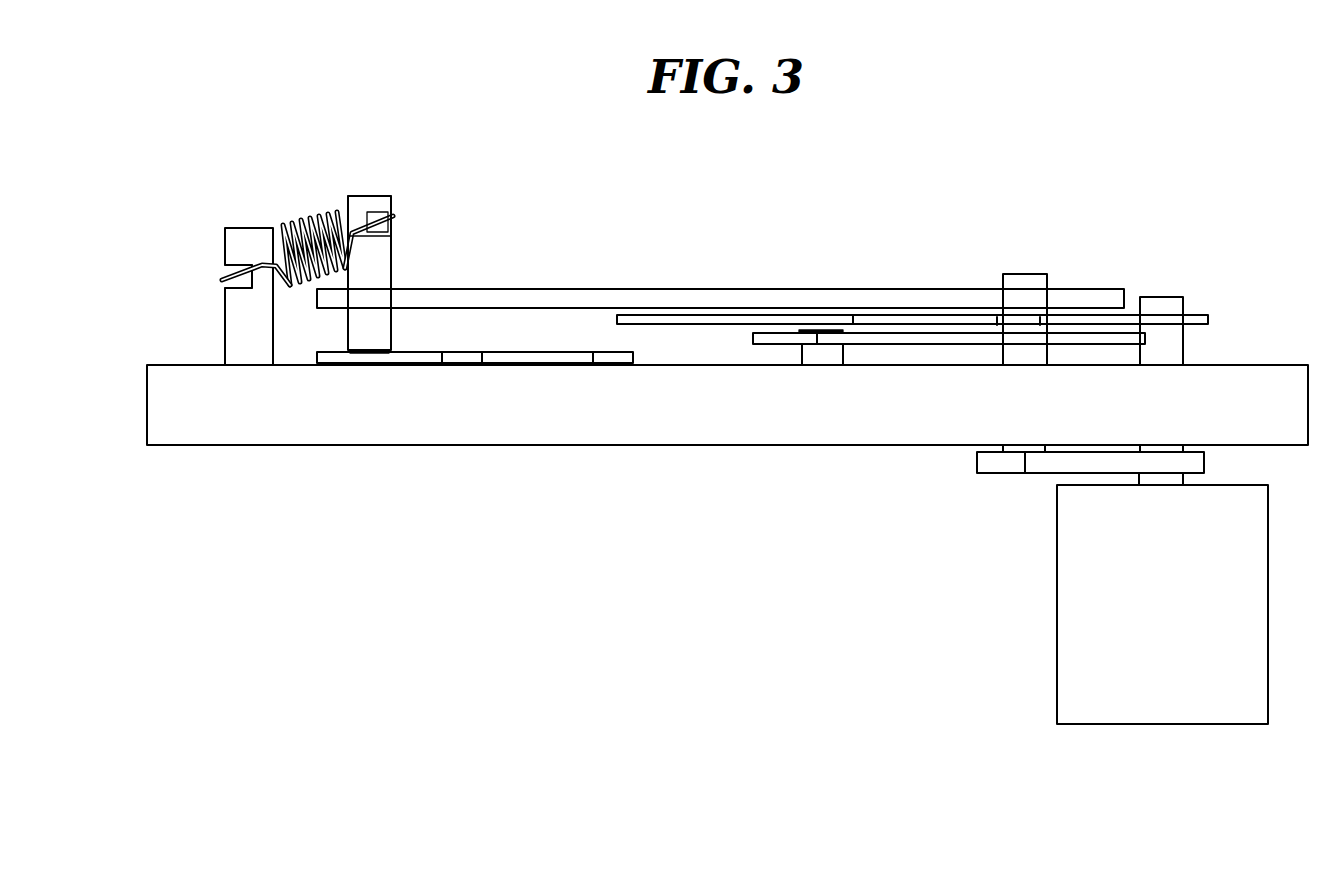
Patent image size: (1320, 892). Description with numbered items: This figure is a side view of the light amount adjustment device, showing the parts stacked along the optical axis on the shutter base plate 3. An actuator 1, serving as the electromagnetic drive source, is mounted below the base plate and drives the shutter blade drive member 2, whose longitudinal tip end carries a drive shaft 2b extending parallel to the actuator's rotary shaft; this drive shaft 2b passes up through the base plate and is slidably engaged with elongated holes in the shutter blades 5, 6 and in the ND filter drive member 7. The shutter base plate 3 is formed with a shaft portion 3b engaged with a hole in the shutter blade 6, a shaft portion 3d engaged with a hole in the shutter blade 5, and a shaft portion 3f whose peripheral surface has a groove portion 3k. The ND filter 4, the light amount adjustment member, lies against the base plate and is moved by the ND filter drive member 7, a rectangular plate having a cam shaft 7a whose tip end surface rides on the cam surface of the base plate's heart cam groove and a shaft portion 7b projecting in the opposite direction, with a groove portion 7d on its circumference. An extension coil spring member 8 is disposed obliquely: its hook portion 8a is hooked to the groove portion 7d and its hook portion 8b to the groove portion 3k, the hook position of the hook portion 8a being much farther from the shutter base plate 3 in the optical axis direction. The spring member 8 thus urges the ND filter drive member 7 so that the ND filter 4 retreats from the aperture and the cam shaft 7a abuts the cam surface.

The actuator 1 is at (1057, 620).
The shutter blade drive member 2 is at (975, 461).
The drive shaft 2b is at (1023, 272).
The shutter base plate 3 is at (1248, 372).
The shaft portion 3b is at (1172, 296).
The shaft portion 3d is at (803, 353).
The shaft portion 3f is at (237, 235).
The groove portion 3k is at (227, 282).
The ND filter 4 is at (525, 357).
The shutter blade 5 is at (905, 338).
The shutter blade 6 is at (884, 320).
The ND filter drive member 7 is at (567, 288).
The cam shaft 7a is at (378, 320).
The shaft portion 7b is at (360, 203).
The groove portion 7d is at (377, 213).
The spring member 8 is at (292, 230).
The hook portion 8a is at (393, 217).
The hook portion 8b is at (228, 277).